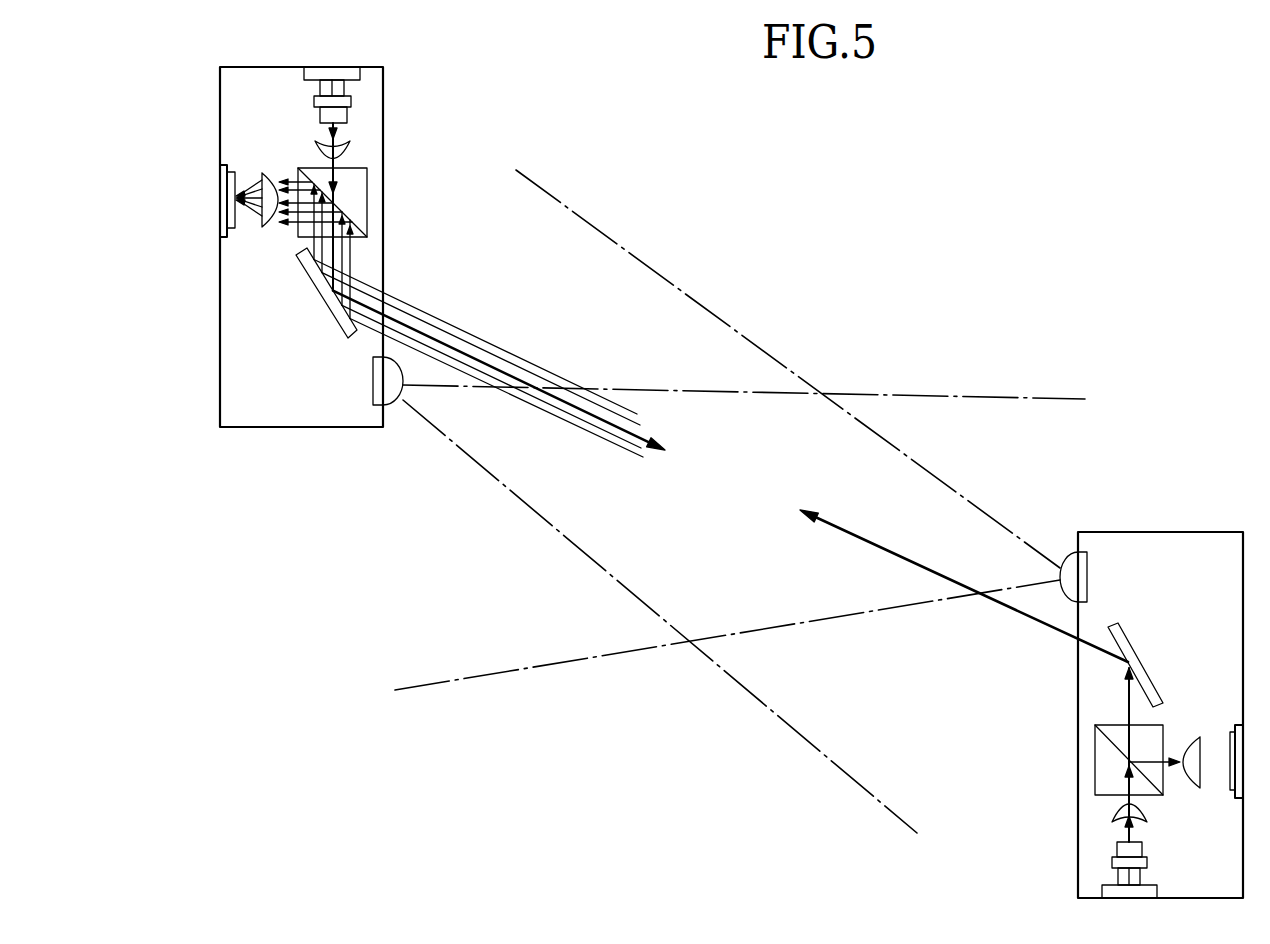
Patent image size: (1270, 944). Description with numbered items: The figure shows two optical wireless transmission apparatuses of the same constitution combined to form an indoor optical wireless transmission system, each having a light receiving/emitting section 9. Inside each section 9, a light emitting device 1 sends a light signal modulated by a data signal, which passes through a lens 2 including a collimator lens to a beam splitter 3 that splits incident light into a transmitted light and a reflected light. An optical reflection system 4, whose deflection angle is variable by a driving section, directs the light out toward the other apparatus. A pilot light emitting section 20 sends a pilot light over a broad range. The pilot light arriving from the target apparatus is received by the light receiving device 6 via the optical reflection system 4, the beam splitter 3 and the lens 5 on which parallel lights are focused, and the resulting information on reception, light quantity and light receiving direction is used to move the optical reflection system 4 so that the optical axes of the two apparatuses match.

The light emitting device 1 is at (343, 100).
The lens 2 is at (350, 149).
The beam splitter 3 is at (363, 188).
The optical reflection system 4 is at (333, 302).
The lens 5 is at (262, 173).
The light receiving device 6 is at (229, 233).
The light receiving/emitting section 9 is at (220, 373).
The pilot light emitting section 20 is at (377, 387).